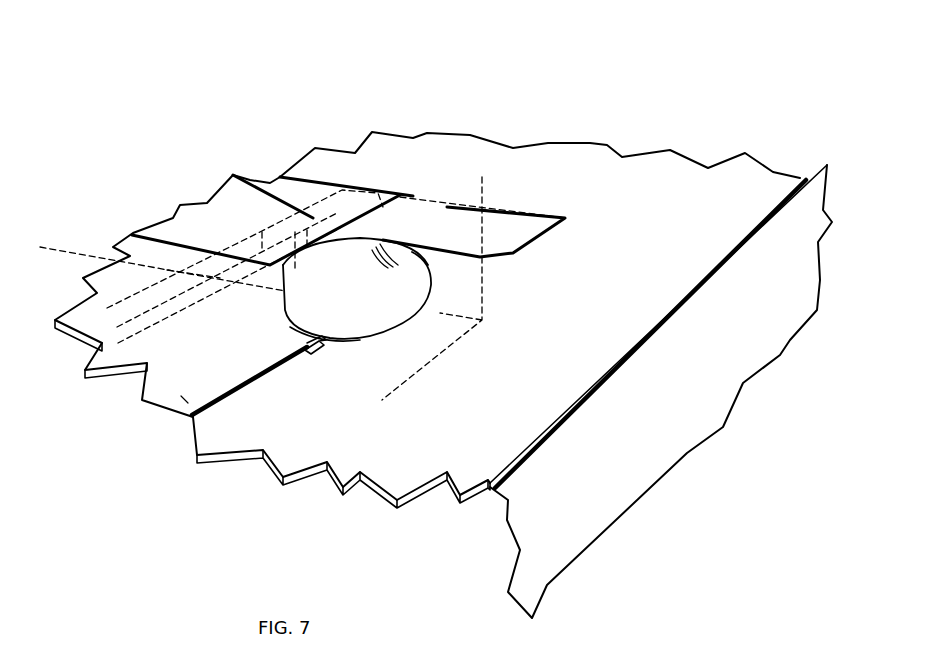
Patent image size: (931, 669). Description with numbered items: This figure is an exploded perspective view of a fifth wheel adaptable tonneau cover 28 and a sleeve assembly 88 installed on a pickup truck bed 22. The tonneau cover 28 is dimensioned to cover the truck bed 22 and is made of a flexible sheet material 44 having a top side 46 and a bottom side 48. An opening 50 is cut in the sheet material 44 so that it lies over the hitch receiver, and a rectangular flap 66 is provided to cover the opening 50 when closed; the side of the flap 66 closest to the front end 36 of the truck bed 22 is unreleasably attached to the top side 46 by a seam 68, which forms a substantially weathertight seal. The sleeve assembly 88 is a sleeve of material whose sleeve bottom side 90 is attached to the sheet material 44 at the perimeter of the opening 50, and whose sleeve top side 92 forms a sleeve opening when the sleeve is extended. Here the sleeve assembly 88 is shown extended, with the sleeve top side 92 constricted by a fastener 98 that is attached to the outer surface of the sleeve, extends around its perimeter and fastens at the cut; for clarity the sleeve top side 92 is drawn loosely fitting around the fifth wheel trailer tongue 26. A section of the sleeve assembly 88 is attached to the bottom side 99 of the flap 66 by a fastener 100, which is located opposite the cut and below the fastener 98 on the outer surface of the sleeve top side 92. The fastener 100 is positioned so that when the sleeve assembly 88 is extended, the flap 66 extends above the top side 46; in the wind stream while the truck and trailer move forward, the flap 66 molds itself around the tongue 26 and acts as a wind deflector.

The truck bed 22 is at (577, 442).
The trailer tongue 26 is at (133, 233).
The tonneau cover 28 is at (272, 414).
The front end 36 is at (673, 171).
The sheet material 44 is at (313, 432).
The top side 46 is at (670, 302).
The bottom side 48 is at (693, 290).
The opening 50 is at (393, 313).
The flap 66 is at (342, 165).
The seam 68 is at (500, 210).
The sleeve assembly 88 is at (387, 287).
The sleeve bottom side 90 is at (337, 340).
The sleeve top side 92 is at (372, 245).
The fastener 98 is at (450, 237).
The bottom side 99 is at (450, 240).
The fastener 100 is at (380, 242).